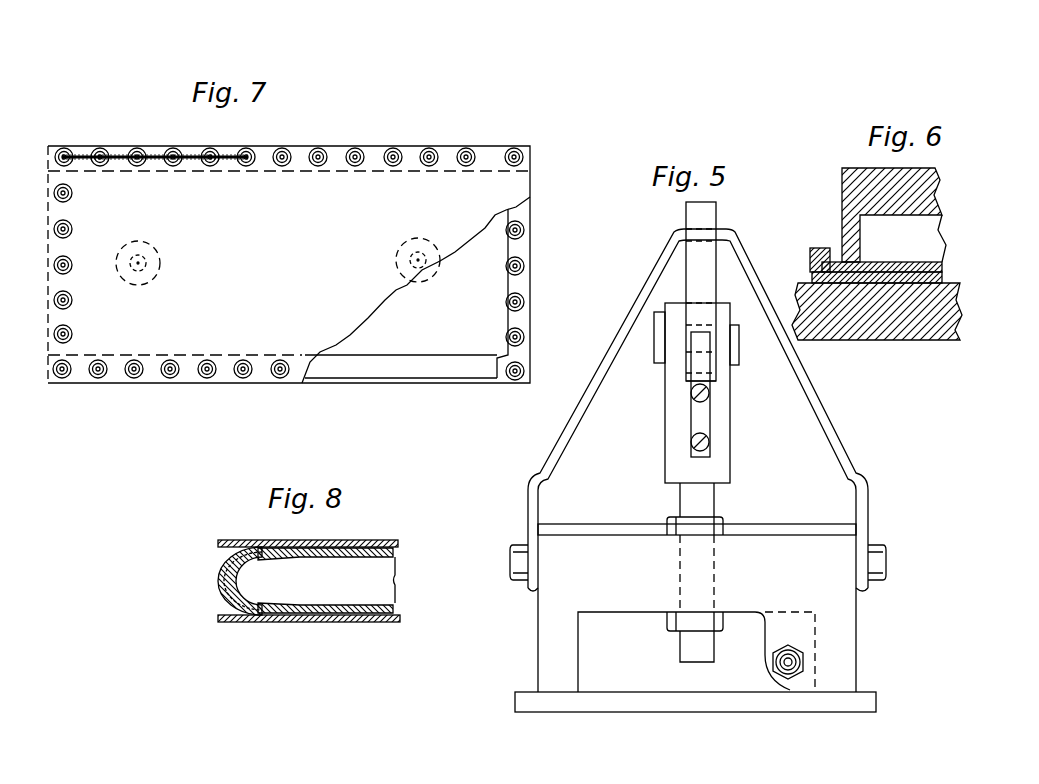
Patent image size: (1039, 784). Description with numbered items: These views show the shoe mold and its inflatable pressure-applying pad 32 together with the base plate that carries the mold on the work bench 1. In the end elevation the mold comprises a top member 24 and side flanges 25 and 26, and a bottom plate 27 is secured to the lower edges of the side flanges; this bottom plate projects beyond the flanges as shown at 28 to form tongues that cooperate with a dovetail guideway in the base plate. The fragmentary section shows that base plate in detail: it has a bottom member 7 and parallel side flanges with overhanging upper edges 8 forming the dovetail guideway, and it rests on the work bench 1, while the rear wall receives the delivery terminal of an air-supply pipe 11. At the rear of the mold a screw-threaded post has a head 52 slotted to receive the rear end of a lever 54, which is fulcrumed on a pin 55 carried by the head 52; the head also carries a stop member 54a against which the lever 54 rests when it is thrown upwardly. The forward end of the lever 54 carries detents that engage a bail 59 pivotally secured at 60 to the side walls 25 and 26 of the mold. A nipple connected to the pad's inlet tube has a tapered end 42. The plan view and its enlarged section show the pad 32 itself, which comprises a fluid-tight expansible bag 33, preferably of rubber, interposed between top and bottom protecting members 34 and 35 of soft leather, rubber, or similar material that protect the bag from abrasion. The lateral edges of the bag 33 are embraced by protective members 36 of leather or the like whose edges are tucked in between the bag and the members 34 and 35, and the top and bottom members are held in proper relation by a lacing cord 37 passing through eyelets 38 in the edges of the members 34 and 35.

In FIG. 6, the work bench 1 is at (958, 322).
In FIG. 6, the bottom member 7 is at (945, 278).
In FIG. 7, the overhanging upper edges 8 is at (232, 418).
In FIG. 6, the overhanging upper edges 8 is at (822, 248).
In FIG. 5, the air-supply pipe 11 is at (765, 745).
In FIG. 5, the top member 24 is at (648, 600).
In FIG. 5, the side flange 25 is at (582, 660).
In FIG. 5, the side flange 26 is at (858, 660).
In FIG. 6, the bottom plate 27 is at (902, 262).
In FIG. 5, the bottom plate 27 is at (704, 702).
In FIG. 6, the tongues 28 is at (813, 266).
In FIG. 5, the tongues 28 is at (516, 699).
In FIG. 7, the pressure-applying pad 32 is at (548, 150).
In FIG. 8, the pressure-applying pad 32 is at (400, 540).
In FIG. 7, the expansible bag 33 is at (492, 297).
In FIG. 8, the expansible bag 33 is at (396, 568).
In FIG. 7, the top protecting member 34 is at (445, 368).
In FIG. 8, the top protecting member 34 is at (340, 546).
In FIG. 8, the bottom protecting member 35 is at (366, 622).
In FIG. 8, the protective members 36 is at (262, 548).
In FIG. 7, the lacing cord 37 is at (122, 154).
In FIG. 8, the lacing cord 37 is at (215, 576).
In FIG. 7, the eyelets 38 is at (172, 362).
In FIG. 5, the tapered end 42 is at (802, 656).
In FIG. 5, the head 52 is at (722, 416).
In FIG. 5, the lever 54 is at (716, 212).
In FIG. 5, the stop member 54a is at (706, 380).
In FIG. 5, the pin 55 is at (740, 346).
In FIG. 5, the bail 59 is at (838, 428).
In FIG. 5, the pivot 60 is at (520, 545).